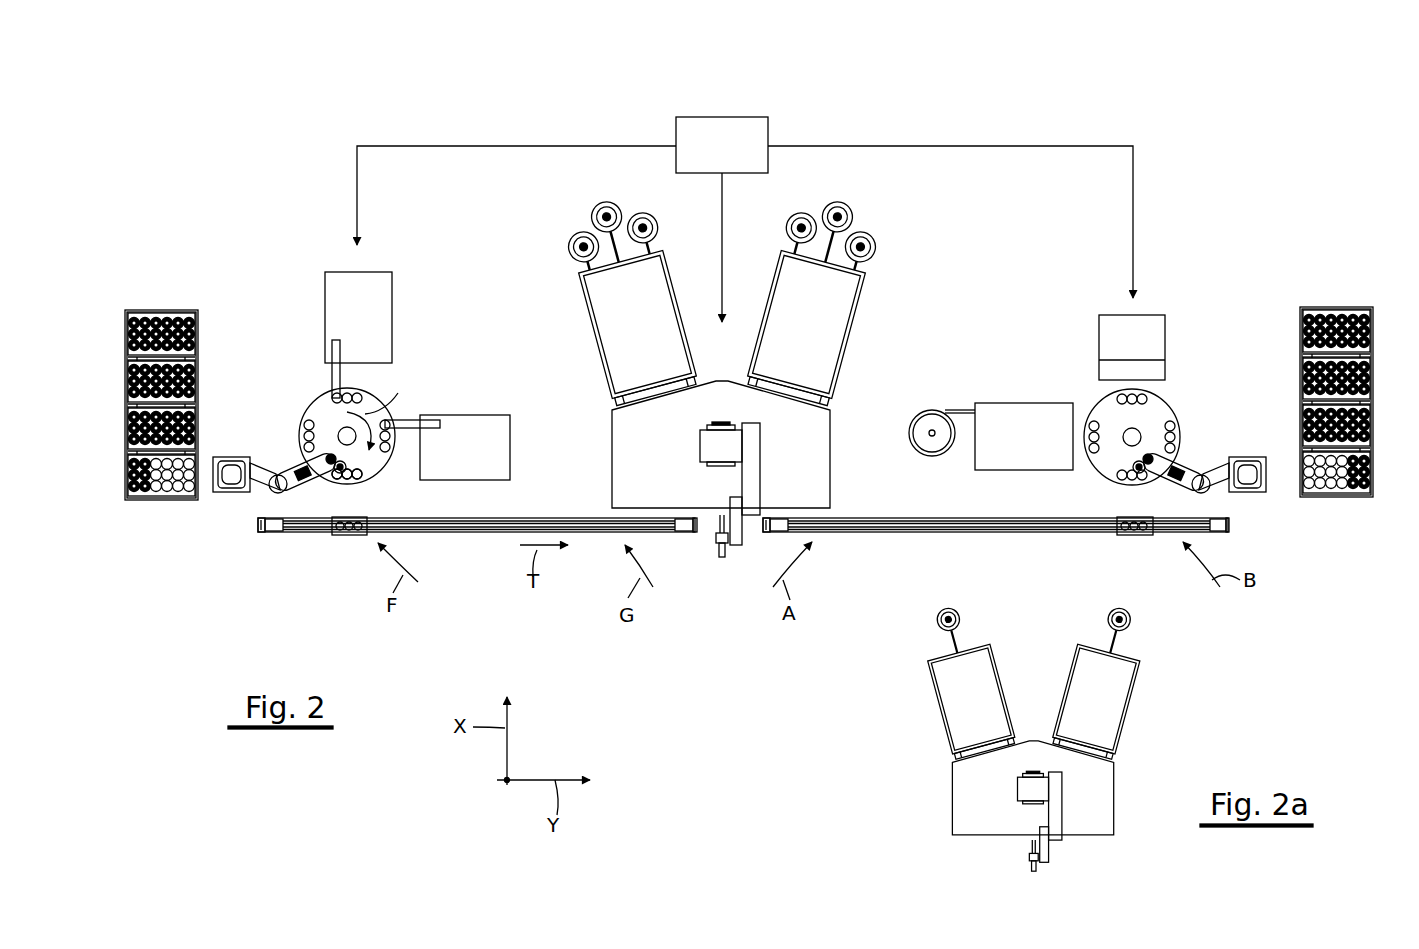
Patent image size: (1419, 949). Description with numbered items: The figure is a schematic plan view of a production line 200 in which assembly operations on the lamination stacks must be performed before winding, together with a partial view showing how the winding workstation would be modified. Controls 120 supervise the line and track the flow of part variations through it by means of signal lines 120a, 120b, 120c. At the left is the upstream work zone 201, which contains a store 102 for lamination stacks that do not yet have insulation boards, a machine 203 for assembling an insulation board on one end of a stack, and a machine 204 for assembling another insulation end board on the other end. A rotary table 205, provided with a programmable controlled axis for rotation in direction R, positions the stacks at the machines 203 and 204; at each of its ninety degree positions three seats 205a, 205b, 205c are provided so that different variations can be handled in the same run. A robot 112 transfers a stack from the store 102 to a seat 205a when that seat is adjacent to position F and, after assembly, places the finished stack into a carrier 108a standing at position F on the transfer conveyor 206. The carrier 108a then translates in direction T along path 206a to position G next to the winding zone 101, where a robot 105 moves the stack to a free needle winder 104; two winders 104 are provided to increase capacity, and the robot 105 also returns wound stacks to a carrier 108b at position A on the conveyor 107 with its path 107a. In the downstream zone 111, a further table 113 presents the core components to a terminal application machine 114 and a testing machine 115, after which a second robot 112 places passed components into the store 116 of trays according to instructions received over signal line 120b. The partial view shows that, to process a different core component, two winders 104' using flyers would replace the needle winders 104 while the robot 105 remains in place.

In FIG. 2, the production line 200 is at (952, 124).
In FIG. 2, the controls 120 is at (691, 135).
In FIG. 2, the signal line 120a is at (357, 180).
In FIG. 2, the signal line 120b is at (722, 206).
In FIG. 2, the signal line 120c is at (1133, 190).
In FIG. 2, the winding zone 101 is at (689, 373).
In FIG. 2A, the winding zone 101 is at (1002, 735).
In FIG. 2, the needle winder 104 is at (734, 298).
In FIG. 2A, the winder using flyers 104' is at (1047, 686).
In FIG. 2, the robot 105 is at (753, 465).
In FIG. 2A, the robot 105 is at (1053, 815).
In FIG. 2, the upstream work zone 201 is at (280, 330).
In FIG. 2, the store 102 is at (115, 370).
In FIG. 2, the robot 112 is at (253, 480).
In FIG. 2, the machine for assembly of an insulation board 203 is at (367, 282).
In FIG. 2, the machine for assembly of another insulation end board 204 is at (472, 428).
In FIG. 2, the table 205 is at (317, 408).
In FIG. 2, the seat 205a is at (333, 468).
In FIG. 2, the seat 205b is at (347, 482).
In FIG. 2, the seat 205c is at (360, 476).
In FIG. 2, the transfer conveyor 206 is at (477, 544).
In FIG. 2, the path 206a is at (547, 525).
In FIG. 2, the carrier 108a is at (345, 537).
In FIG. 2, the carrier 108b is at (1133, 537).
In FIG. 2, the discharge conveyor 107 is at (996, 532).
In FIG. 2, the conveyor belt 107a is at (872, 525).
In FIG. 2, the zone 111 is at (1065, 313).
In FIG. 2, the table 113 is at (1155, 415).
In FIG. 2, the terminal application machine 114 is at (1008, 418).
In FIG. 2, the testing machine 115 is at (1158, 333).
In FIG. 2, the store 116 is at (1345, 295).